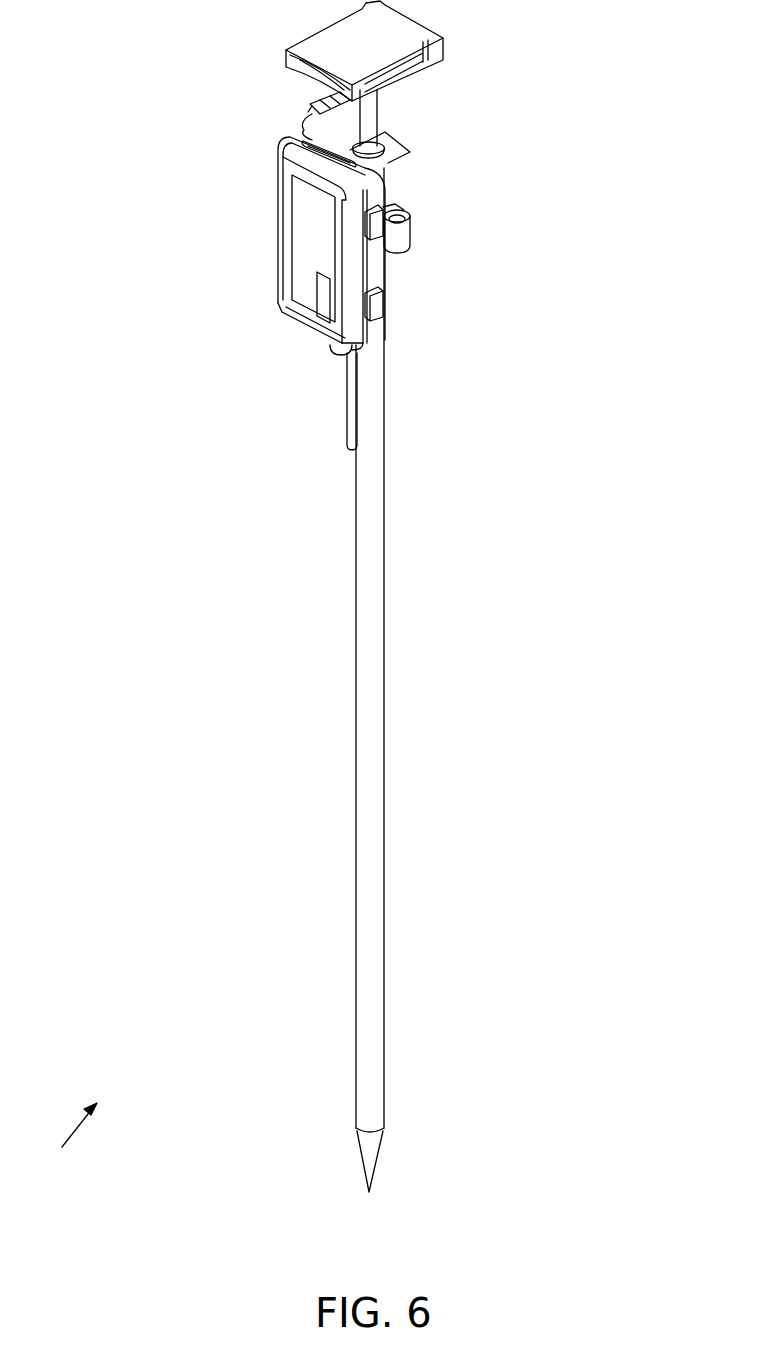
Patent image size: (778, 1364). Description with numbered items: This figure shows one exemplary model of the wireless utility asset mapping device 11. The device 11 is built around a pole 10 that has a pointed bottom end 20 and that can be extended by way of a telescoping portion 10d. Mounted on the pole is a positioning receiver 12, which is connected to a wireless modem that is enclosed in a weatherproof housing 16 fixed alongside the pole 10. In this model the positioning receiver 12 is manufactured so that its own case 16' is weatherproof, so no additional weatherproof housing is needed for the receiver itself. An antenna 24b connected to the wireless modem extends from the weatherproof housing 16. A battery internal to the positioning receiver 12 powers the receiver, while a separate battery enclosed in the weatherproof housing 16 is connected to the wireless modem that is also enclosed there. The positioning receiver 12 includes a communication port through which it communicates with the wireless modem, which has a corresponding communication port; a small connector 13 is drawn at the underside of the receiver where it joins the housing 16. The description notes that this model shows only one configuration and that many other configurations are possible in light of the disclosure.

The pole 10 is at (384, 720).
The telescoping portion 10d is at (378, 112).
The wireless utility asset mapping device 11 is at (70, 1138).
The positioning receiver 12 is at (412, 22).
The connector 13 is at (322, 92).
The weatherproof housing 16 is at (316, 246).
The case 16' is at (293, 50).
The pointed bottom end 20 is at (361, 1150).
The antenna 24b is at (348, 430).